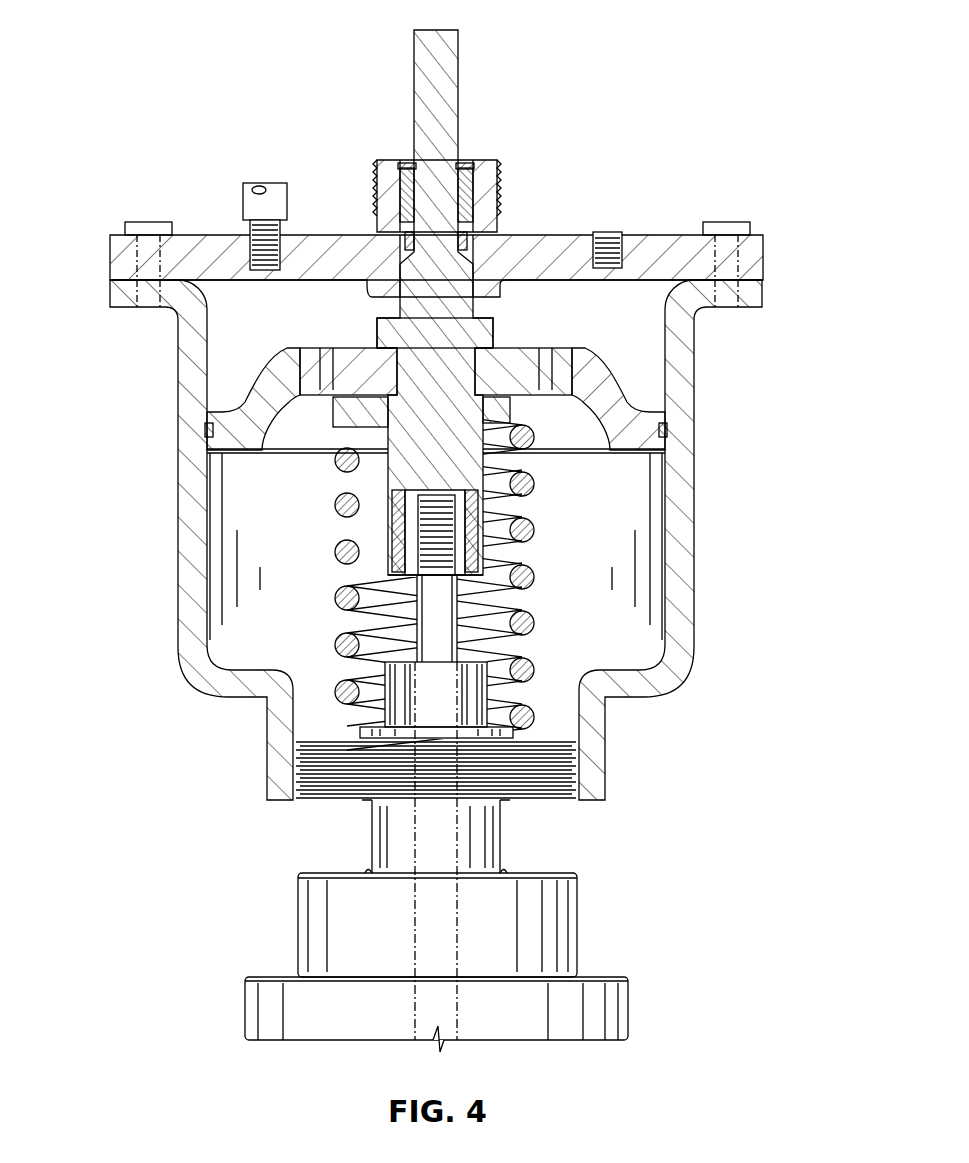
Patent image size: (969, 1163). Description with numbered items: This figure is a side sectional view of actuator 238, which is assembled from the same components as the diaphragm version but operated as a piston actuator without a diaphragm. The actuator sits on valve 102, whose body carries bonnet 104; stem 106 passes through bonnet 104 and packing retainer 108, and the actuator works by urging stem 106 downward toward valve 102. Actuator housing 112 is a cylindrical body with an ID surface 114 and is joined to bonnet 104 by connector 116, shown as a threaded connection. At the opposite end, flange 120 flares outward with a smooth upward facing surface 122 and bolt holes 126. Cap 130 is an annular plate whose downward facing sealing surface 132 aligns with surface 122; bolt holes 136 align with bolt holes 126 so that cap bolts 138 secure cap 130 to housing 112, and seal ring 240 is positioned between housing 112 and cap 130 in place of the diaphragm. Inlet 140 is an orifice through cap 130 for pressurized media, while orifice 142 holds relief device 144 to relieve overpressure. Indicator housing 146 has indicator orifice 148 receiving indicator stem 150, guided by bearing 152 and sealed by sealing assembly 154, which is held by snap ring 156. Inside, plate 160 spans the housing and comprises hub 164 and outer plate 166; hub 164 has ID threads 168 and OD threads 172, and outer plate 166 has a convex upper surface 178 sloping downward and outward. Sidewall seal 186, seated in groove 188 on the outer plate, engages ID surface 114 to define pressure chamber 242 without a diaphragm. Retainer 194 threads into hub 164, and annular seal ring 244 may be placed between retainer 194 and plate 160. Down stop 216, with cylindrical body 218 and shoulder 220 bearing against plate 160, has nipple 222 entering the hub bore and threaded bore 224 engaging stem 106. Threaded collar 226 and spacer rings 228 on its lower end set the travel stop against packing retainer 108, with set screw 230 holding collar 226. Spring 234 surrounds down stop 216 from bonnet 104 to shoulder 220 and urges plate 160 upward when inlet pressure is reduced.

The valve 102 is at (628, 1012).
The bonnet 104 is at (652, 885).
The stem 106 is at (432, 630).
The packing retainer 108 is at (487, 685).
The actuator housing 112 is at (700, 625).
The ID surface 114 is at (660, 605).
The connector 116 is at (560, 772).
The flange 120 is at (763, 285).
The upward facing surface 122 is at (763, 258).
The bolt holes 126 is at (763, 303).
The cap 130 is at (195, 235).
The sealing surface 132 is at (110, 300).
The bolt holes 136 is at (110, 255).
The cap bolts 138 is at (125, 228).
The inlet 140 is at (607, 240).
The orifice 142 is at (272, 266).
The relief device 144 is at (262, 184).
The indicator housing 146 is at (492, 162).
The indicator orifice 148 is at (467, 240).
The indicator stem 150 is at (412, 40).
The bearing 152 is at (490, 230).
The sealing assembly 154 is at (472, 186).
The snap ring 156 is at (470, 165).
The plate 160 is at (300, 452).
The hub 164 is at (320, 365).
The outer plate 166 is at (225, 398).
The ID threads 168 is at (530, 392).
The OD threads 172 is at (560, 415).
The upper surface 178 is at (252, 360).
The sidewall seal 186 is at (667, 432).
The groove 188 is at (205, 430).
The retainer 194 is at (388, 325).
The down stop 216 is at (313, 550).
The cylindrical body 218 is at (392, 500).
The shoulder 220 is at (600, 442).
The nipple 222 is at (300, 437).
The threaded bore 224 is at (482, 590).
The threaded collar 226 is at (395, 548).
The spacer rings 228 is at (535, 487).
The set screw 230 is at (478, 503).
The spring 234 is at (338, 694).
The actuator 238 is at (185, 78).
The seal ring 240 is at (110, 282).
The pressure chamber 242 is at (303, 313).
The annular seal ring 244 is at (497, 346).